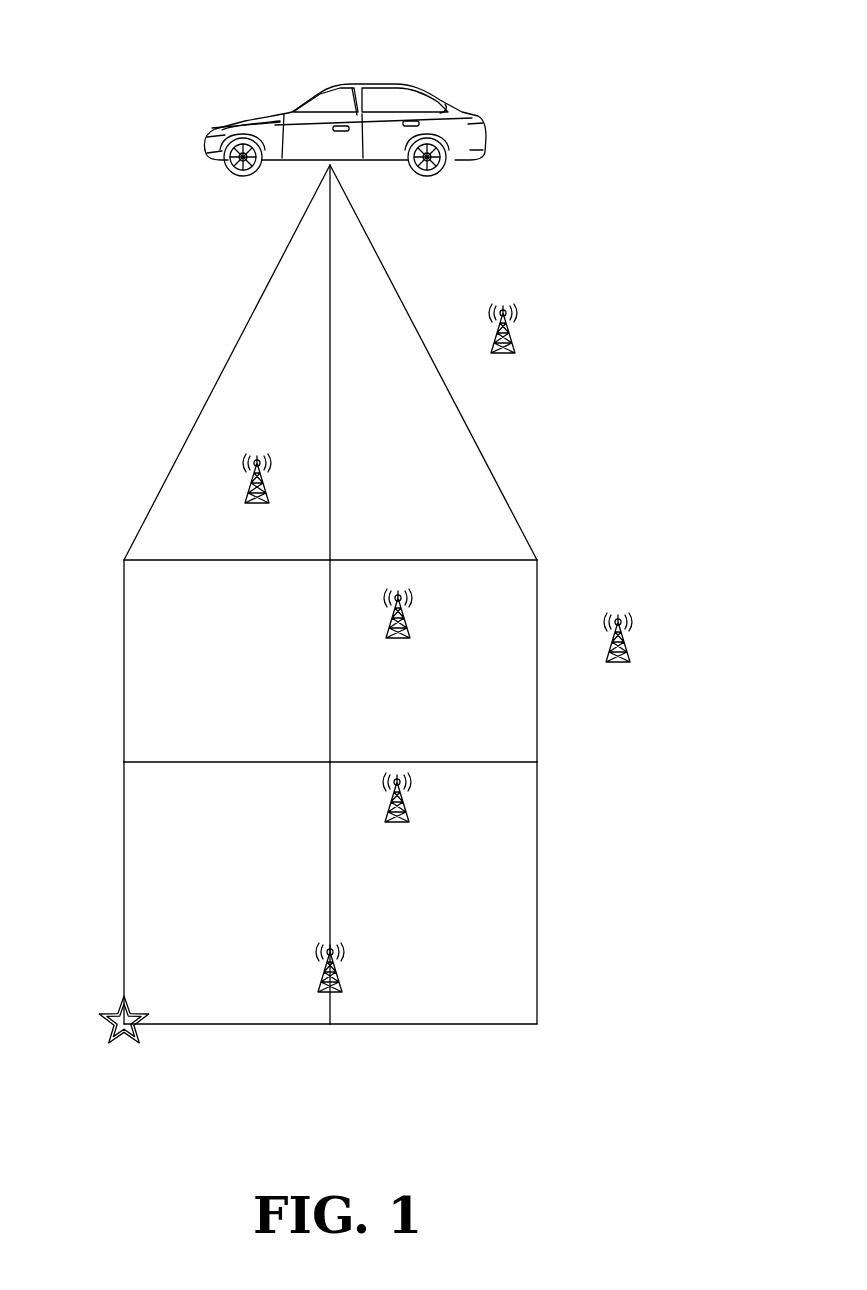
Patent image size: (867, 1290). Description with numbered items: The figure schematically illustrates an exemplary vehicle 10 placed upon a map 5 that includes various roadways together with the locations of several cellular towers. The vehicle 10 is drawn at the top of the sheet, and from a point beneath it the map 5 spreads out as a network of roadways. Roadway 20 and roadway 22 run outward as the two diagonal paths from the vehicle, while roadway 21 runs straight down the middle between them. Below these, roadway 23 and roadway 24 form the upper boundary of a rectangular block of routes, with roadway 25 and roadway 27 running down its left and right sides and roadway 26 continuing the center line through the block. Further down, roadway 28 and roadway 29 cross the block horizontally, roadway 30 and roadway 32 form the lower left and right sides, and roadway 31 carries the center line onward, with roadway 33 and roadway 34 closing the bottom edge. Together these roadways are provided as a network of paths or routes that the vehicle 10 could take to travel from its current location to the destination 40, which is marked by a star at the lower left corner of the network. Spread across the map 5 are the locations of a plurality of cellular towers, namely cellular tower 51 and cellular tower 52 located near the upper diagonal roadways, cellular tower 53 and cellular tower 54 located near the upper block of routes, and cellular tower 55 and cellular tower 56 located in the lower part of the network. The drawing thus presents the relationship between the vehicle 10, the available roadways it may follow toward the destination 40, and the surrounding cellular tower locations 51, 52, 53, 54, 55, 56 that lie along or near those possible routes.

The map 5 is at (538, 222).
The vehicle 10 is at (387, 84).
The roadway 20 is at (218, 376).
The roadway 21 is at (330, 318).
The roadway 22 is at (473, 437).
The roadway 23 is at (187, 560).
The roadway 24 is at (472, 560).
The roadway 25 is at (124, 728).
The roadway 26 is at (330, 658).
The roadway 27 is at (537, 745).
The roadway 28 is at (185, 762).
The roadway 29 is at (473, 762).
The roadway 30 is at (124, 888).
The roadway 31 is at (330, 915).
The roadway 32 is at (537, 990).
The roadway 33 is at (232, 1024).
The roadway 34 is at (473, 1024).
The destination 40 is at (121, 1045).
The cellular tower 51 is at (513, 337).
The cellular tower 52 is at (250, 481).
The cellular tower 53 is at (405, 612).
The cellular tower 54 is at (630, 655).
The cellular tower 55 is at (410, 806).
The cellular tower 56 is at (340, 998).